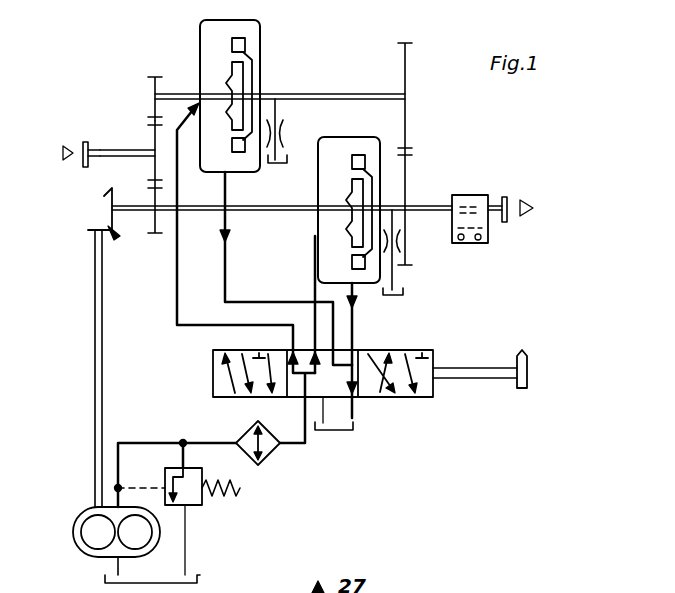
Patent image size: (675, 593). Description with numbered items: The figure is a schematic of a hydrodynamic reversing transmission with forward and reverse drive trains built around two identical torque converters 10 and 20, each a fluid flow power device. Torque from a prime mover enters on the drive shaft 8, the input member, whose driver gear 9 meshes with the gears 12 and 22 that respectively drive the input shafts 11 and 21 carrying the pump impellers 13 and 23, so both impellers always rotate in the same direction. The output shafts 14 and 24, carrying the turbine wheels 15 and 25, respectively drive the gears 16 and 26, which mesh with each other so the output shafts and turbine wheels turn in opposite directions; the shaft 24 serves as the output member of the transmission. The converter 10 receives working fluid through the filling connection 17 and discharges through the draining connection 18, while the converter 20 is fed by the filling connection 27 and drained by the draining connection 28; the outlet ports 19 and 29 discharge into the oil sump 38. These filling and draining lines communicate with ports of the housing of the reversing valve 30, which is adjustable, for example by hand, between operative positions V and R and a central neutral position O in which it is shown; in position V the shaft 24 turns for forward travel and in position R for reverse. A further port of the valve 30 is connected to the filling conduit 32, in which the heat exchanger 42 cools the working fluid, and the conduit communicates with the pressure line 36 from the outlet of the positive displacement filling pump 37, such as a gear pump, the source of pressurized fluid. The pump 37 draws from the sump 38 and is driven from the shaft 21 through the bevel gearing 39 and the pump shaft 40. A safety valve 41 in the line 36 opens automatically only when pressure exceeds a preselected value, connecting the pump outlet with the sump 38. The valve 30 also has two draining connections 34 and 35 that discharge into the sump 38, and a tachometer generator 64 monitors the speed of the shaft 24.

The drive shaft 8 is at (100, 158).
The driver gear 9 is at (152, 137).
The torque converter 10 is at (263, 32).
The input shaft 11 is at (172, 93).
The gear 12 is at (150, 82).
The pump impeller 13 is at (235, 107).
The output shaft 14 is at (347, 92).
The turbine wheel 15 is at (238, 152).
The gear 16 is at (408, 66).
The filling connection 17 is at (176, 318).
The draining connection 18 is at (222, 270).
The outlet port 19 is at (280, 126).
The torque converter 20 is at (367, 134).
The input shaft 21 is at (276, 208).
The gear 22 is at (151, 240).
The pump impeller 23 is at (360, 220).
The output shaft 24 is at (420, 207).
The turbine wheel 25 is at (360, 262).
The gear 26 is at (408, 169).
The filling connection 27 is at (311, 237).
The draining connection 28 is at (354, 336).
The outlet port 29 is at (402, 279).
The reversing valve 30 is at (215, 381).
The filling conduit 32 is at (303, 407).
The draining connection 34 is at (354, 405).
The draining connection 35 is at (323, 425).
The pressure line 36 is at (140, 442).
The filling pump 37 is at (86, 550).
The oil sump 38 is at (288, 161).
The bevel gearing 39 is at (86, 234).
The pump shaft 40 is at (95, 378).
The safety valve 41 is at (192, 500).
The heat exchanger 42 is at (266, 452).
The tachometer generator 64 is at (472, 195).